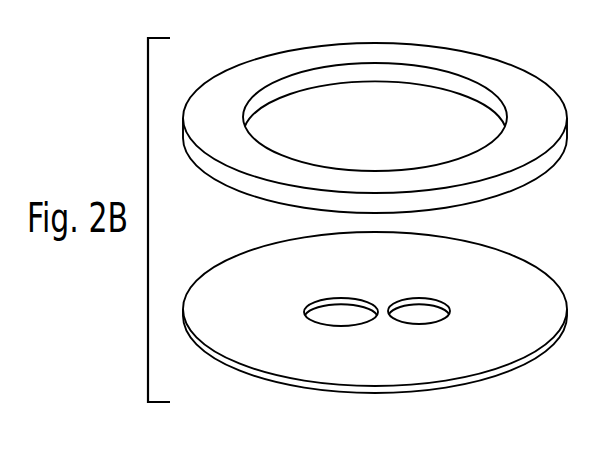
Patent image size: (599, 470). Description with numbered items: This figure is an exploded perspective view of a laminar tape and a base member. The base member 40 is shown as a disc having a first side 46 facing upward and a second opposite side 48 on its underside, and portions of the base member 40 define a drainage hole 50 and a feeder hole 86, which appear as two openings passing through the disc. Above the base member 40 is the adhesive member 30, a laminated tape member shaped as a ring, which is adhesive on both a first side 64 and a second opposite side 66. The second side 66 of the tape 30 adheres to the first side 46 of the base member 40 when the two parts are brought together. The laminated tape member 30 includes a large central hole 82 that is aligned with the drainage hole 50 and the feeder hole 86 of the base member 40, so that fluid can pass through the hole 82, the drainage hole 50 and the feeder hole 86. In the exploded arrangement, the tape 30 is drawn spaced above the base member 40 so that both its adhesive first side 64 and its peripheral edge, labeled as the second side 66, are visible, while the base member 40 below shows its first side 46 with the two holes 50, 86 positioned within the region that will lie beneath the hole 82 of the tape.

The adhesive member 30 is at (232, 72).
The hole 82 is at (298, 82).
The first side 64 is at (507, 73).
The second opposite side 66 is at (521, 204).
The base member 40 is at (308, 388).
The first side 46 is at (225, 275).
The second opposite side 48 is at (250, 393).
The drainage hole 50 is at (313, 302).
The feeder hole 86 is at (448, 307).